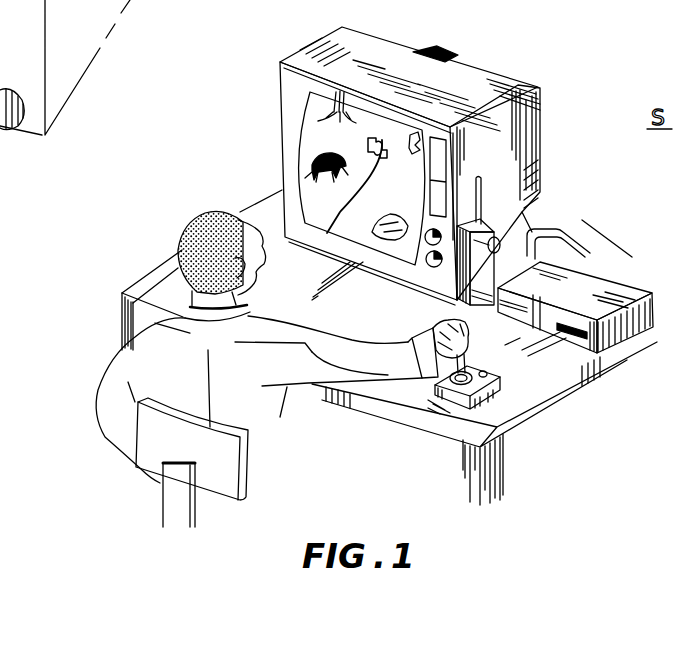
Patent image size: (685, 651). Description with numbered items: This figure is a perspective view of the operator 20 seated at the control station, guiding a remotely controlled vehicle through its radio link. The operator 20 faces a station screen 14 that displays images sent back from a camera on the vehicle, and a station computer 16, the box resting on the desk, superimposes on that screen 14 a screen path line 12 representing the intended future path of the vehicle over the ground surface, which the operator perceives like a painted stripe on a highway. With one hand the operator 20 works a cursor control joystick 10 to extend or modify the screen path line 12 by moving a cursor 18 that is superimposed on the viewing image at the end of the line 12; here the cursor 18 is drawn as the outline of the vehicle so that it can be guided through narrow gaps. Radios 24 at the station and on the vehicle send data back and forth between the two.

The cursor control joystick 10 is at (483, 397).
The screen path line 12 is at (342, 194).
The station screen 14 is at (308, 112).
The station computer 16 is at (623, 327).
The cursor 18 is at (382, 140).
The operator 20 is at (112, 362).
The radios 24 is at (485, 213).